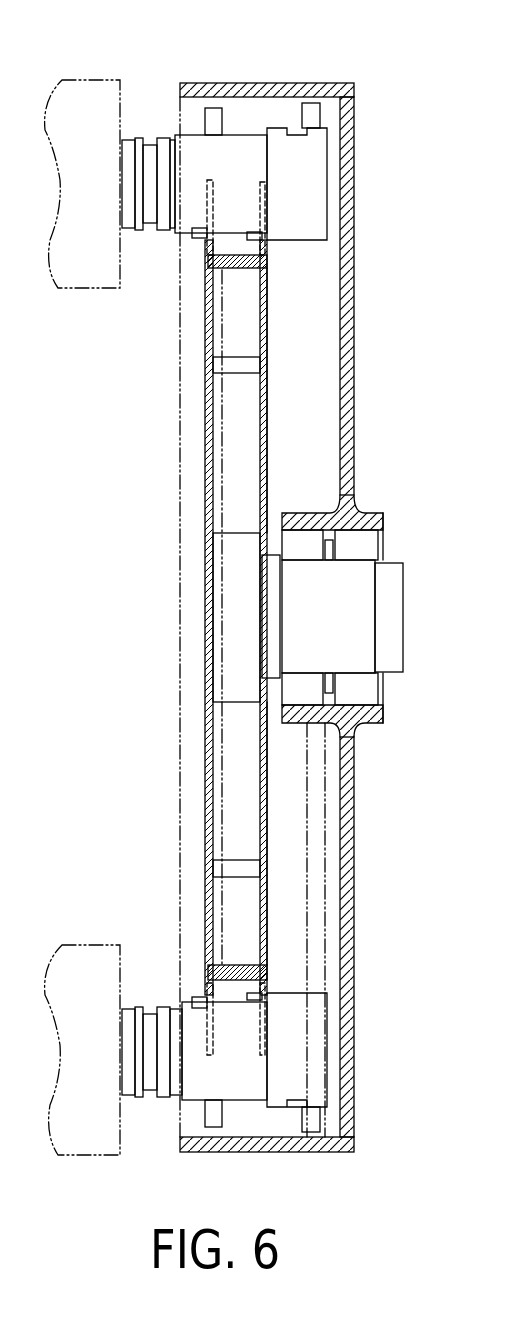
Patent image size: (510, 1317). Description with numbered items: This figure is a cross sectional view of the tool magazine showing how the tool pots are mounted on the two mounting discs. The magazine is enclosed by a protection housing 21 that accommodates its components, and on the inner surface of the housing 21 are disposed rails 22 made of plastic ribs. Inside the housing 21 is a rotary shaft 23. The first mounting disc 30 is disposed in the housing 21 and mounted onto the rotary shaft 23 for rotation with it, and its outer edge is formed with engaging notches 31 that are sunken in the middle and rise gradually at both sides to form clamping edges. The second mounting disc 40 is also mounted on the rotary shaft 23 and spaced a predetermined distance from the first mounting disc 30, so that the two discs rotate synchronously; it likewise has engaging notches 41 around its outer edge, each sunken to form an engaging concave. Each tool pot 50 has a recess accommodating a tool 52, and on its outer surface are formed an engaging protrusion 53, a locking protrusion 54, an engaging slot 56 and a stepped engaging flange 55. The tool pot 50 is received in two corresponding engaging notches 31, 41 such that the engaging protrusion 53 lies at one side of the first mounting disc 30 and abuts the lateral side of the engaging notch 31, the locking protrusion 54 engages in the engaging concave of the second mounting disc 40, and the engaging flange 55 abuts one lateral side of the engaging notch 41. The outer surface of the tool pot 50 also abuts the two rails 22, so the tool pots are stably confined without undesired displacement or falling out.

The protection housing 21 is at (277, 83).
The rails 22 is at (210, 92).
The rotary shaft 23 is at (322, 552).
The first mounting disc 30 is at (208, 372).
The engaging notches 31 is at (207, 200).
The second mounting disc 40 is at (268, 398).
The engaging notches 41 is at (263, 182).
The tool pot 50 is at (177, 135).
The tool 52 is at (85, 100).
The engaging protrusion 53 is at (196, 238).
The locking protrusion 54 is at (258, 238).
The stepped engaging flange 55 is at (268, 160).
The engaging slot 56 is at (293, 130).